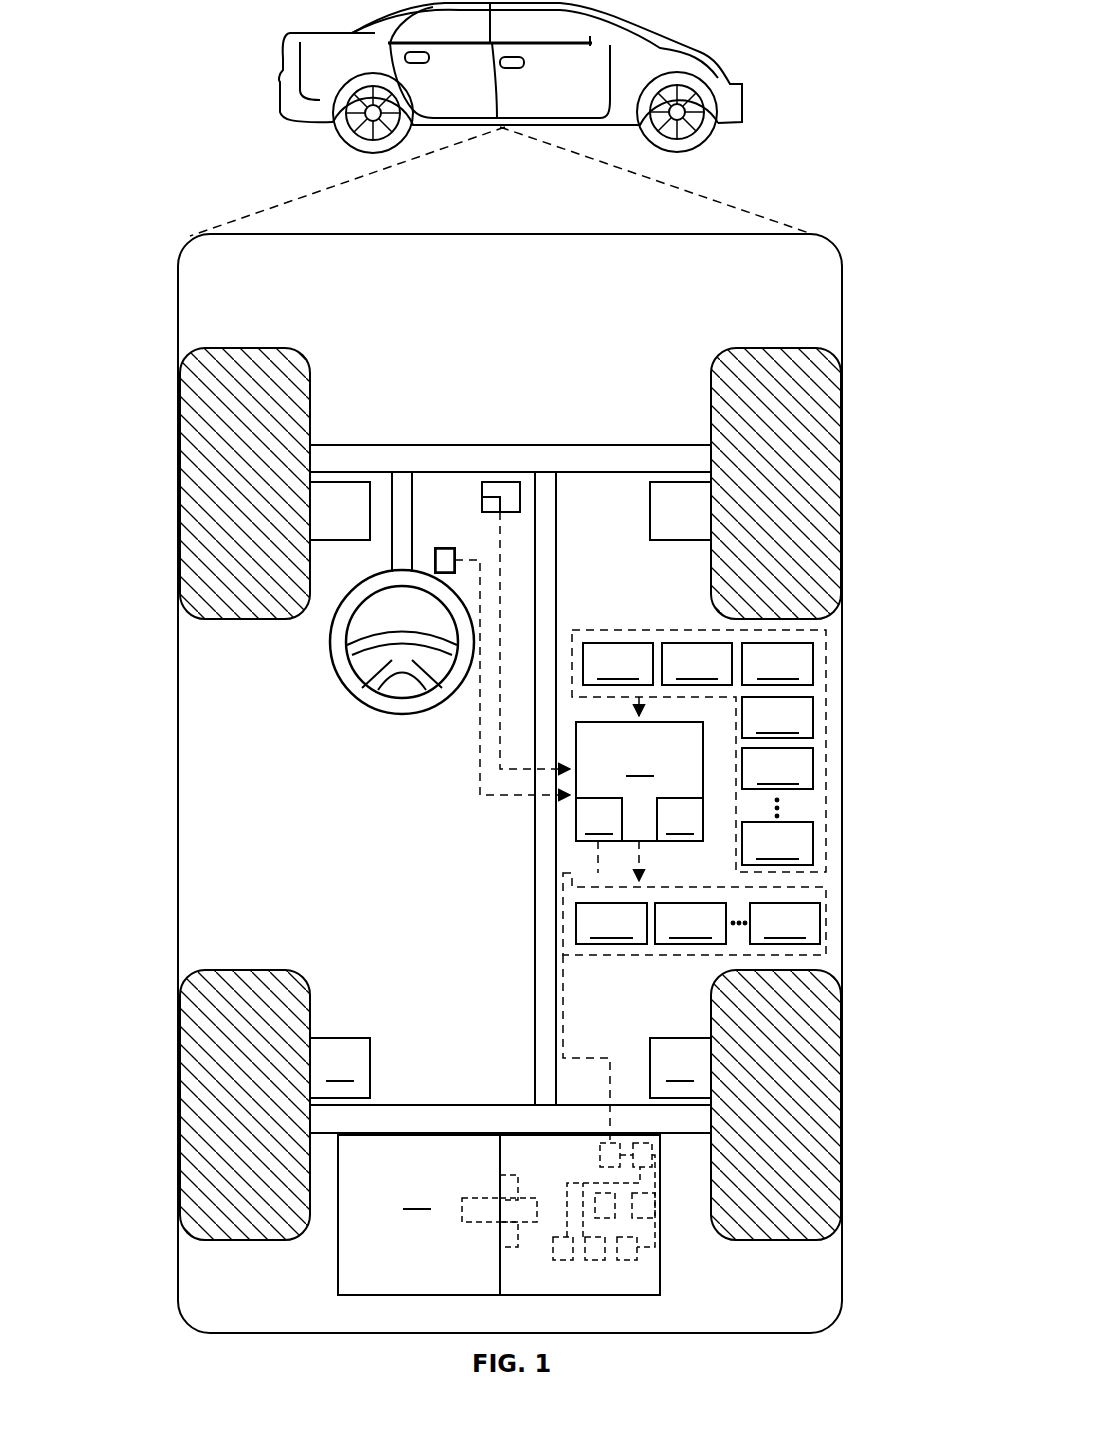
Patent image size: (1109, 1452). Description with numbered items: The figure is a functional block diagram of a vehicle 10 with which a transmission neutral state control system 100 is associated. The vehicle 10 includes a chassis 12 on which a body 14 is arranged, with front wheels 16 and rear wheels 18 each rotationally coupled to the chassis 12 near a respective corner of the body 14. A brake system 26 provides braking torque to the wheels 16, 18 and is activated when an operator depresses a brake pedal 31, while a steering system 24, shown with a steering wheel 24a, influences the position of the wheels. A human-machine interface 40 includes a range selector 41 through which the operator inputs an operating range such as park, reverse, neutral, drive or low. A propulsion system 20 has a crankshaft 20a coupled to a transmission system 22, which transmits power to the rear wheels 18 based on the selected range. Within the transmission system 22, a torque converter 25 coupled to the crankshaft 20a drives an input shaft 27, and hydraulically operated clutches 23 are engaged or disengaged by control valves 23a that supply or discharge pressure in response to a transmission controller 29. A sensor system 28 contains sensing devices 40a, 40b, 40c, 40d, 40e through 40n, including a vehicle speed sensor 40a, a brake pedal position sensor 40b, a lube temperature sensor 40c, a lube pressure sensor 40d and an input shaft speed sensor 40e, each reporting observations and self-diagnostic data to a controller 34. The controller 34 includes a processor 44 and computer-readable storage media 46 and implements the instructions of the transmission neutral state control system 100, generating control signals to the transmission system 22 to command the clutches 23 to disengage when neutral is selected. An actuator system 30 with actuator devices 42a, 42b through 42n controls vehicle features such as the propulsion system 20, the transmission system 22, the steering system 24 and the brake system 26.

The vehicle 10 is at (280, 97).
The transmission neutral state control system 100 is at (528, 738).
The body 14 is at (178, 778).
The front wheels 16 is at (245, 358).
The rear wheels 18 is at (245, 1242).
The chassis 12 is at (535, 870).
The brake system 26 is at (360, 492).
The steering system 24 is at (420, 485).
The steering wheel 24a is at (390, 703).
The brake pedal 31 is at (427, 572).
The human-machine interface 40 is at (505, 490).
The range selector 41 is at (490, 505).
The sensor system 28 is at (699, 718).
The vehicle speed sensor 40a is at (618, 664).
The brake pedal position sensor 40b is at (697, 664).
The lube temperature sensor 40c is at (777, 664).
The lube pressure sensor 40d is at (777, 717).
The input shaft speed sensor 40e is at (777, 768).
The sensing device 40n is at (777, 843).
The controller 34 is at (639, 781).
The processor 44 is at (599, 819).
The computer-readable storage device or media 46 is at (680, 819).
The actuator system 30 is at (694, 946).
The actuator device 42a is at (611, 923).
The actuator device 42b is at (690, 923).
The actuator device 42n is at (785, 923).
The propulsion system 20 is at (419, 1215).
The crankshaft 20a is at (478, 1222).
The transmission system 22 is at (512, 1295).
The torque converter 25 is at (512, 1175).
The input shaft 27 is at (532, 1198).
The transmission controller 29 is at (606, 1143).
The clutches 23 is at (615, 1207).
The control valves 23a is at (648, 1143).